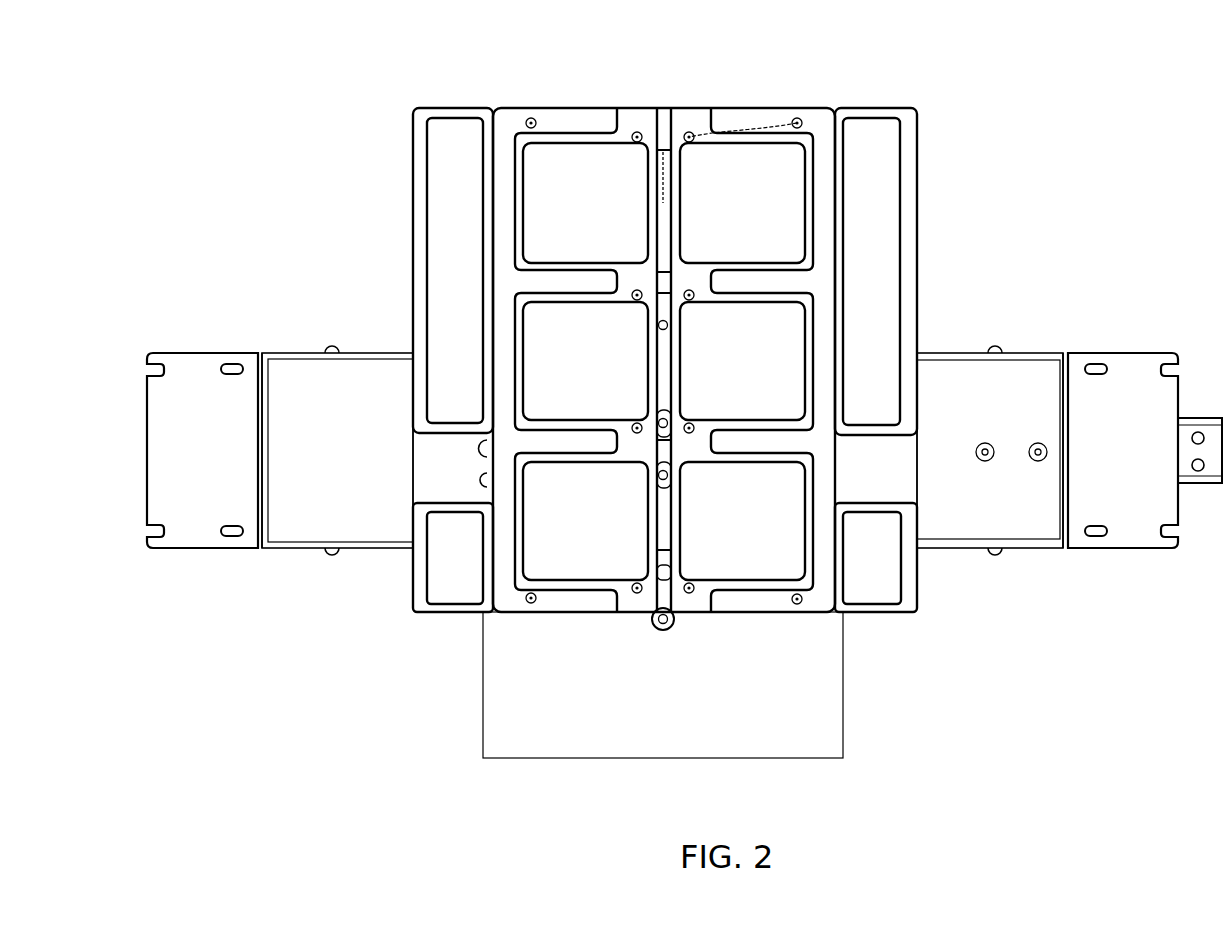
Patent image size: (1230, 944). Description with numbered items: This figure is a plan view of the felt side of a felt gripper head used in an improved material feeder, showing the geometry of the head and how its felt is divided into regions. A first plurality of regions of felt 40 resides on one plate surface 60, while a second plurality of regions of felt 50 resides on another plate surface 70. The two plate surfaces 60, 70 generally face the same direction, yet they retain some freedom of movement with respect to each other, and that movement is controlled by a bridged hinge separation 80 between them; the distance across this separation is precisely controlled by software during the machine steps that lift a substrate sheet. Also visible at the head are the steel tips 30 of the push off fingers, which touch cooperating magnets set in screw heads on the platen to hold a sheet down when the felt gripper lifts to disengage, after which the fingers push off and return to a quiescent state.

The steel tips 30 is at (797, 118).
The first plurality of regions of felt 40 is at (557, 325).
The second plurality of regions of felt 50 is at (773, 240).
The plate surface 60 is at (507, 149).
The plate surface 70 is at (822, 148).
The bridged hinge separation 80 is at (797, 123).